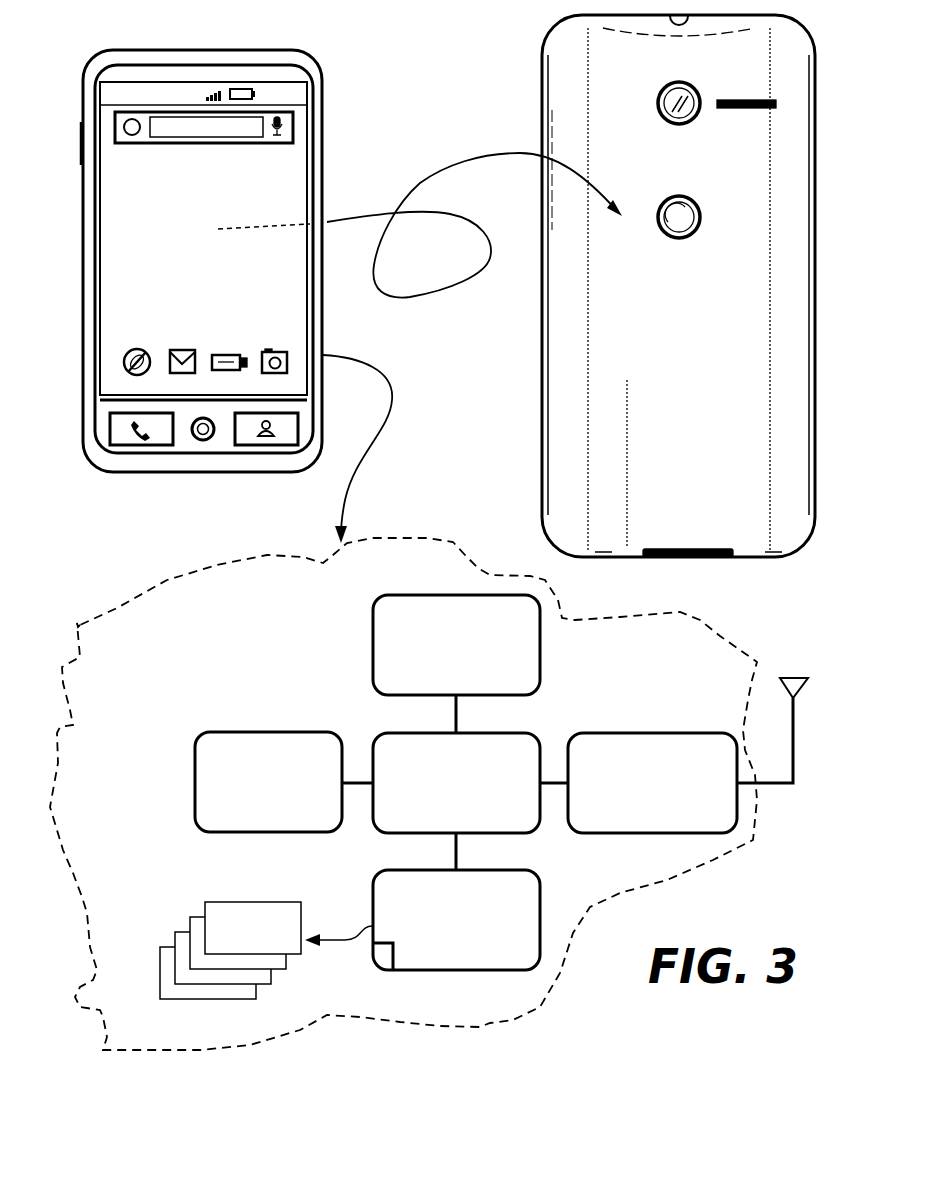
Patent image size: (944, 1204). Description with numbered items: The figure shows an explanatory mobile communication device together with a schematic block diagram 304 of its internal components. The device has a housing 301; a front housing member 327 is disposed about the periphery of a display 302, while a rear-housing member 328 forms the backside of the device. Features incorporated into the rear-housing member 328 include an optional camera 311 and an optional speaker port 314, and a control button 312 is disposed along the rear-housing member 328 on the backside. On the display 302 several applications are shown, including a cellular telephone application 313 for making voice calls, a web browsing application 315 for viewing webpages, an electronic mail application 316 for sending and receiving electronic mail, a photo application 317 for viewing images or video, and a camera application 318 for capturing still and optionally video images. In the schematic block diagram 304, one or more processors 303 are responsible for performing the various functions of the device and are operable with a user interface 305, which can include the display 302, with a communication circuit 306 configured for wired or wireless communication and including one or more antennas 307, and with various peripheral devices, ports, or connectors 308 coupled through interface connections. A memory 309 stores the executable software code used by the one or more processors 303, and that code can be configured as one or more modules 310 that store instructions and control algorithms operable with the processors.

The housing 301 is at (182, 46).
The display 302 is at (280, 173).
The front housing member 327 is at (84, 102).
The rear-housing member 328 is at (779, 73).
The camera 311 is at (675, 83).
The speaker port 314 is at (753, 109).
The control button 312 is at (698, 225).
The cellular telephone application 313 is at (160, 437).
The web browsing application 315 is at (137, 349).
The electronic mail application 316 is at (182, 349).
The photo application 317 is at (228, 354).
The camera application 318 is at (278, 350).
The one or more processors 303 is at (532, 733).
The schematic block diagram 304 is at (724, 636).
The user interface 305 is at (372, 647).
The communication circuit 306 is at (657, 733).
The antenna 307 is at (790, 676).
The peripheral devices, ports, or connectors 308 is at (262, 732).
The memory 309 is at (540, 895).
The modules 310 is at (209, 889).